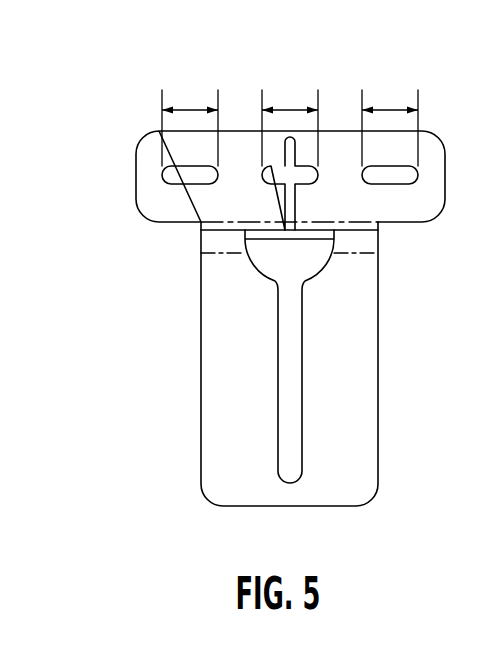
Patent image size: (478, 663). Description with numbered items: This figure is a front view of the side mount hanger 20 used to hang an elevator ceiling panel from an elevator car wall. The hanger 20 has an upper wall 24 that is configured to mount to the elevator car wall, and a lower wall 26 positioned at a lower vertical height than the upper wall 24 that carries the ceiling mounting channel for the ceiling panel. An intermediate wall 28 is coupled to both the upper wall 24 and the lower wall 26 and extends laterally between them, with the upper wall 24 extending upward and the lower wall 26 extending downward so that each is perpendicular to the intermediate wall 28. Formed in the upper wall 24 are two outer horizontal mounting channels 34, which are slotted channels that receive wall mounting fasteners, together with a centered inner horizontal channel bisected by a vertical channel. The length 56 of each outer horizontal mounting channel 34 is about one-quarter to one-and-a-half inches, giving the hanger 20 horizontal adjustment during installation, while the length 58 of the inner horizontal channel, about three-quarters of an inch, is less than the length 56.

The hanger 20 is at (107, 97).
The upper wall 24 is at (136, 184).
The lower wall 26 is at (201, 340).
The intermediate wall 28 is at (290, 234).
The outer horizontal mounting channel 34 is at (183, 185).
The length of outer horizontal mounting channel 56 is at (290, 123).
The length of inner horizontal mounting channel 58 is at (290, 123).